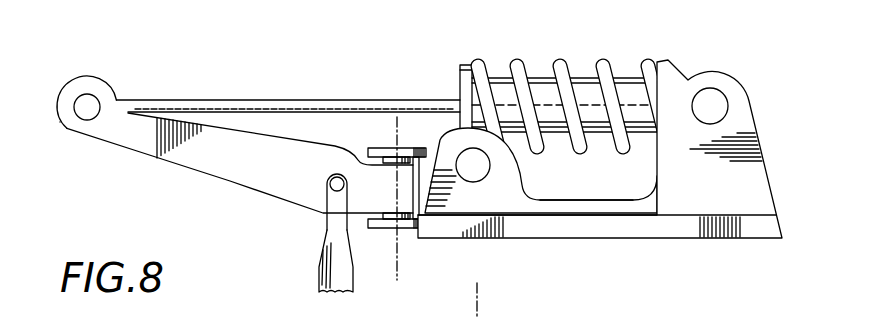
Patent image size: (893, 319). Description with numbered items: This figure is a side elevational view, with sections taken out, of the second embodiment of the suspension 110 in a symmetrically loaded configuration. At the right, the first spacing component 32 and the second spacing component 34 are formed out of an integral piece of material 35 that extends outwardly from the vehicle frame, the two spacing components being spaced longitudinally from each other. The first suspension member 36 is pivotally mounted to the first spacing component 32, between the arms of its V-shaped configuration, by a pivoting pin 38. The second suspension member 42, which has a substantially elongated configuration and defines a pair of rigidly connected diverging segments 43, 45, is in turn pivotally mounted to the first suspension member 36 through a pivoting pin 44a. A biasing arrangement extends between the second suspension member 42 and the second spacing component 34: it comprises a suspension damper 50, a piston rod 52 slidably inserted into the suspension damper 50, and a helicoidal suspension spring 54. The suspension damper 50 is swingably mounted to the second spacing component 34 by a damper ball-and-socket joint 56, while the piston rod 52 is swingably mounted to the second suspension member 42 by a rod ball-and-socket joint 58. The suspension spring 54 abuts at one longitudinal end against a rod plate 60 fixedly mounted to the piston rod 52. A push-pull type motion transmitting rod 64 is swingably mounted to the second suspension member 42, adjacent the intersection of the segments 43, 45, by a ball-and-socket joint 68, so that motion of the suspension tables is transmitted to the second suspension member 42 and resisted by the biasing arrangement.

The suspension 110 is at (771, 119).
The rod ball-and-socket joint 58 is at (90, 100).
The piston rod 52 is at (289, 107).
The rod plate 60 is at (463, 63).
The first suspension member 36 is at (433, 153).
The helicoidal suspension spring 54 is at (520, 68).
The suspension damper 50 is at (628, 88).
The damper ball-and-socket joint 56 is at (710, 97).
The second spacing component 34 is at (755, 183).
The integral piece of material 35 is at (693, 200).
The first spacing component 32 is at (500, 172).
The pivoting pin 38 is at (481, 175).
The pivoting pin 44a is at (397, 217).
The motion transmitting rod 64 is at (323, 267).
The ball-and-socket joint 68 is at (323, 181).
The diverging segment 43 is at (263, 143).
The second suspension member 42 is at (244, 128).
The diverging segment 45 is at (77, 127).